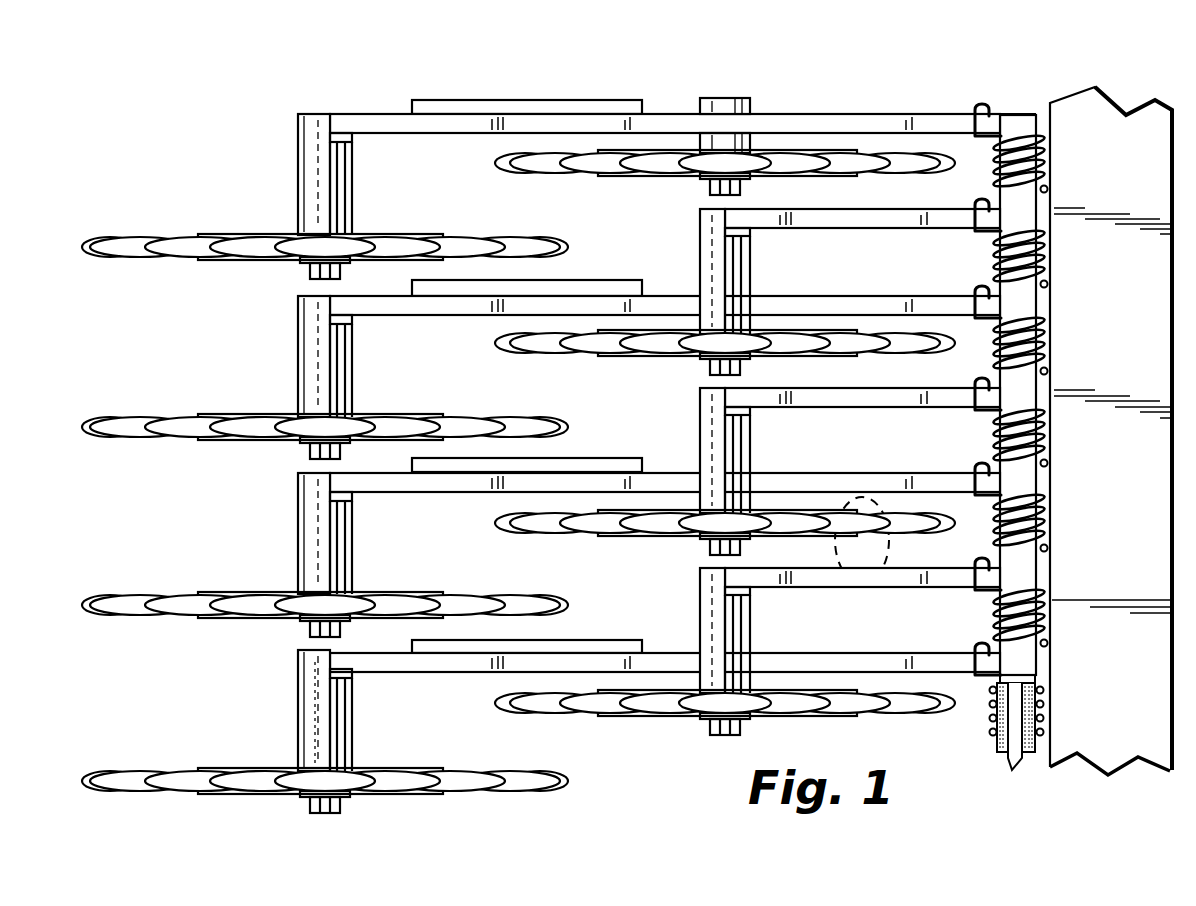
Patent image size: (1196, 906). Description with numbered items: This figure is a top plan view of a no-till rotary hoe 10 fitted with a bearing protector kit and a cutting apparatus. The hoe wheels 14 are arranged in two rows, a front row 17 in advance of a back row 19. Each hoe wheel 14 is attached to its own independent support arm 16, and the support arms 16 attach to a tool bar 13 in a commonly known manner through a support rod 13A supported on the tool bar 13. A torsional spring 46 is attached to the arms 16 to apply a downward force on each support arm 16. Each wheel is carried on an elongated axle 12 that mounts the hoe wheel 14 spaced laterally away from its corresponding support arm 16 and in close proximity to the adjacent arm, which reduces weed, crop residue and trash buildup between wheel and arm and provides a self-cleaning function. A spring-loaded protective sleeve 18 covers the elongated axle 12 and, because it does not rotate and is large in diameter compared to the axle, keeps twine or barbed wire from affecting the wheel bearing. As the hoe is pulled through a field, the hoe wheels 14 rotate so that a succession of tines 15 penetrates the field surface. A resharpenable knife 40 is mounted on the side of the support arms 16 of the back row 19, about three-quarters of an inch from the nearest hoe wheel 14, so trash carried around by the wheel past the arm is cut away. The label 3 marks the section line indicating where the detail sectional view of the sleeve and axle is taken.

The section line for FIG. 3 is at (318, 455).
The no-till rotary hoe 10 is at (276, 734).
The elongated axle 12 is at (336, 730).
The tool bar 13 is at (1126, 571).
The support rod 13A is at (1013, 772).
The hoe wheel 14 is at (378, 237).
The tines 15 is at (417, 420).
The support arm 16 is at (479, 133).
The front row 17 is at (760, 95).
The protective sleeve 18 is at (298, 159).
The back row 19 is at (372, 96).
The resharpenable knife 40 is at (544, 100).
The torsional spring 46 is at (993, 515).